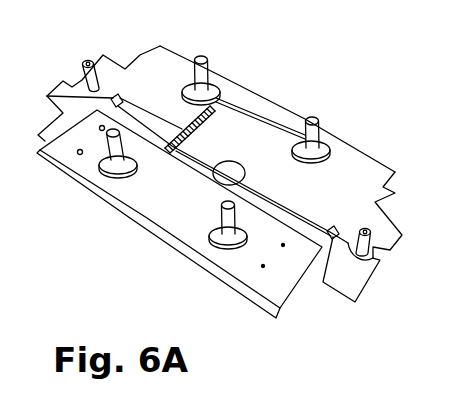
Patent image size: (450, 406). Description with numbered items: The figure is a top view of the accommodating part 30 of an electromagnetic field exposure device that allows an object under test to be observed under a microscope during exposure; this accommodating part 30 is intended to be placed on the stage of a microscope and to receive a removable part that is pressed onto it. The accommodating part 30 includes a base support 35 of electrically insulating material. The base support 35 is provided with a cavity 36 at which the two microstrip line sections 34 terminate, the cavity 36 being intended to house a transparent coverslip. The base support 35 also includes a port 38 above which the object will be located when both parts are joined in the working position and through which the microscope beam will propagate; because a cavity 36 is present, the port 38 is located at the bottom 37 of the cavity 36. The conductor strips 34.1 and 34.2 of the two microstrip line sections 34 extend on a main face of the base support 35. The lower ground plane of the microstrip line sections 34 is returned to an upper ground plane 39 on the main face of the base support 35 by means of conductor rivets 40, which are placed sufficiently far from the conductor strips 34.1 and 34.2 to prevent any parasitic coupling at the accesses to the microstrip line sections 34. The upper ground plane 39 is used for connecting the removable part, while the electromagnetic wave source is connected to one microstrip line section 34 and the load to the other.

The accommodating part 30 is at (383, 147).
The microstrip line sections 34 is at (122, 93).
The conductor strip 34.1 is at (370, 260).
The conductor strip 34.2 is at (47, 96).
The base support 35 is at (398, 171).
The cavity 36 is at (243, 133).
The bottom of the cavity 37 is at (262, 143).
The port 38 is at (245, 174).
The upper ground plane 39 is at (147, 231).
The conductor rivets 40 is at (283, 245).